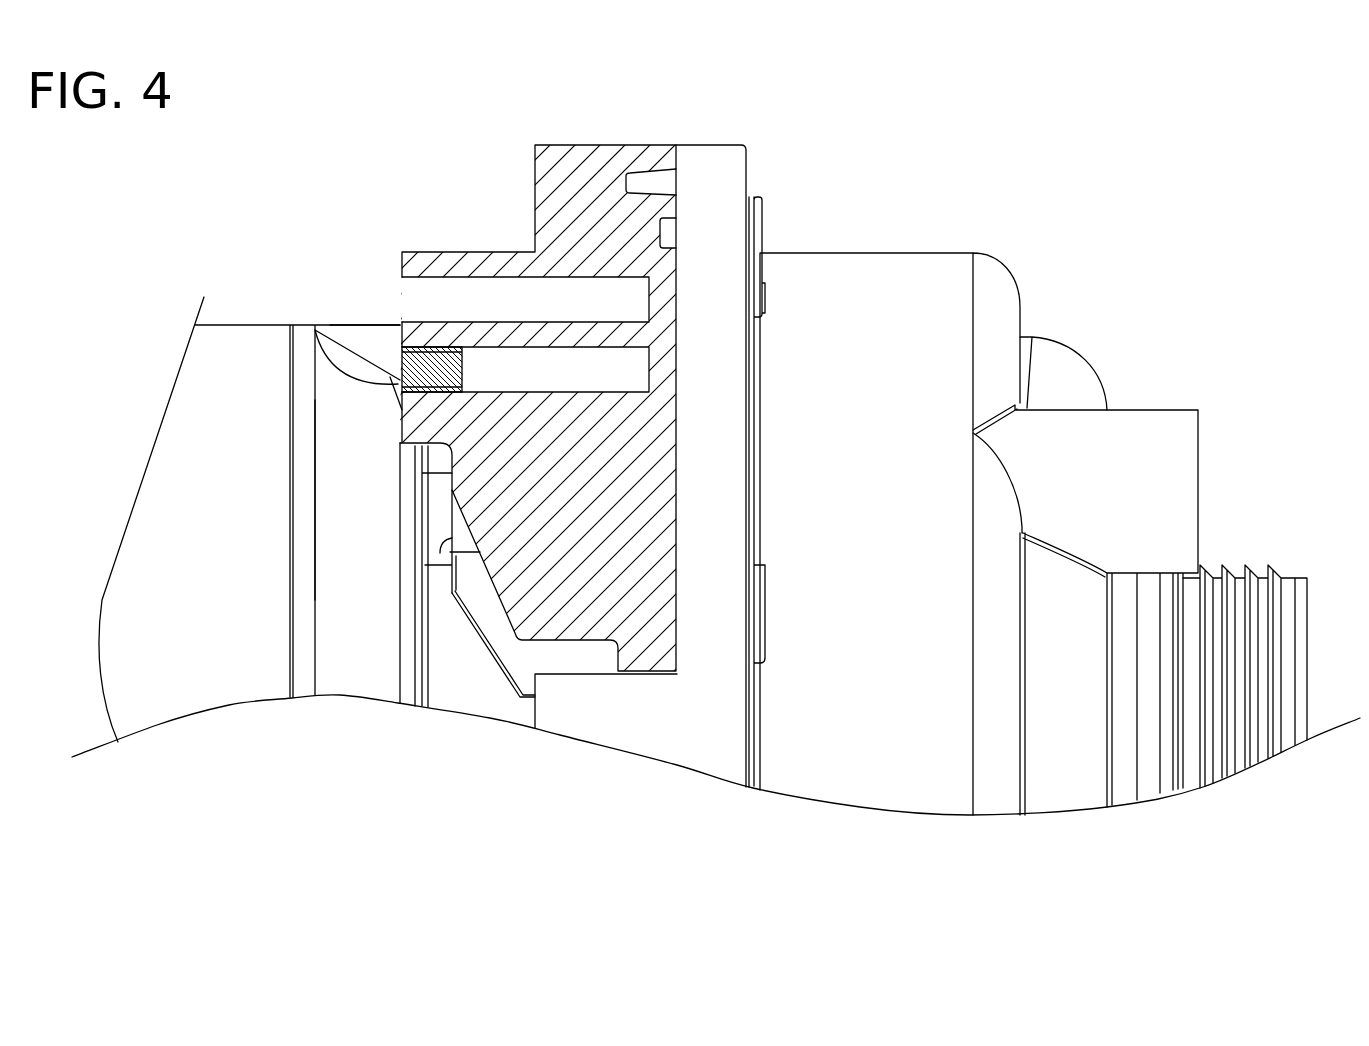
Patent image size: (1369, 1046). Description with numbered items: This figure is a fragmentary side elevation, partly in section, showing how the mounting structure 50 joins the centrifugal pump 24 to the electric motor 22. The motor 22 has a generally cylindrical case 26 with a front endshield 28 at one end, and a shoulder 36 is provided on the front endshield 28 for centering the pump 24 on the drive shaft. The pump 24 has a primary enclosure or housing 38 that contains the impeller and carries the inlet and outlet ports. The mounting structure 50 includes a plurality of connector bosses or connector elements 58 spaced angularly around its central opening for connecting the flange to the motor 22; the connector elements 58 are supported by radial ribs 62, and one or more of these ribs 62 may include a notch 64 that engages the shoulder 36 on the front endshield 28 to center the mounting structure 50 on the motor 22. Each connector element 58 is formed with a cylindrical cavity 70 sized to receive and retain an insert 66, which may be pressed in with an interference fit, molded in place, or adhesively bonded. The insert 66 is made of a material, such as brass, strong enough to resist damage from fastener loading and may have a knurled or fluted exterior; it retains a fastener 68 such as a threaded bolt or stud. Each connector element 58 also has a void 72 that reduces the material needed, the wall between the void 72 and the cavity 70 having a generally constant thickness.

The electric motor 22 is at (226, 300).
The centrifugal pump 24 is at (953, 220).
The case 26 is at (178, 690).
The front endshield 28 is at (362, 325).
The shoulder 36 is at (400, 442).
The housing 38 is at (990, 256).
The mounting structure 50 is at (693, 130).
The connector element 58 is at (413, 257).
The radial rib 62 is at (508, 553).
The notch 64 is at (433, 447).
The insert 66 is at (450, 363).
The fastener 68 is at (320, 328).
The cylindrical cavity 70 is at (525, 350).
The void 72 is at (590, 280).